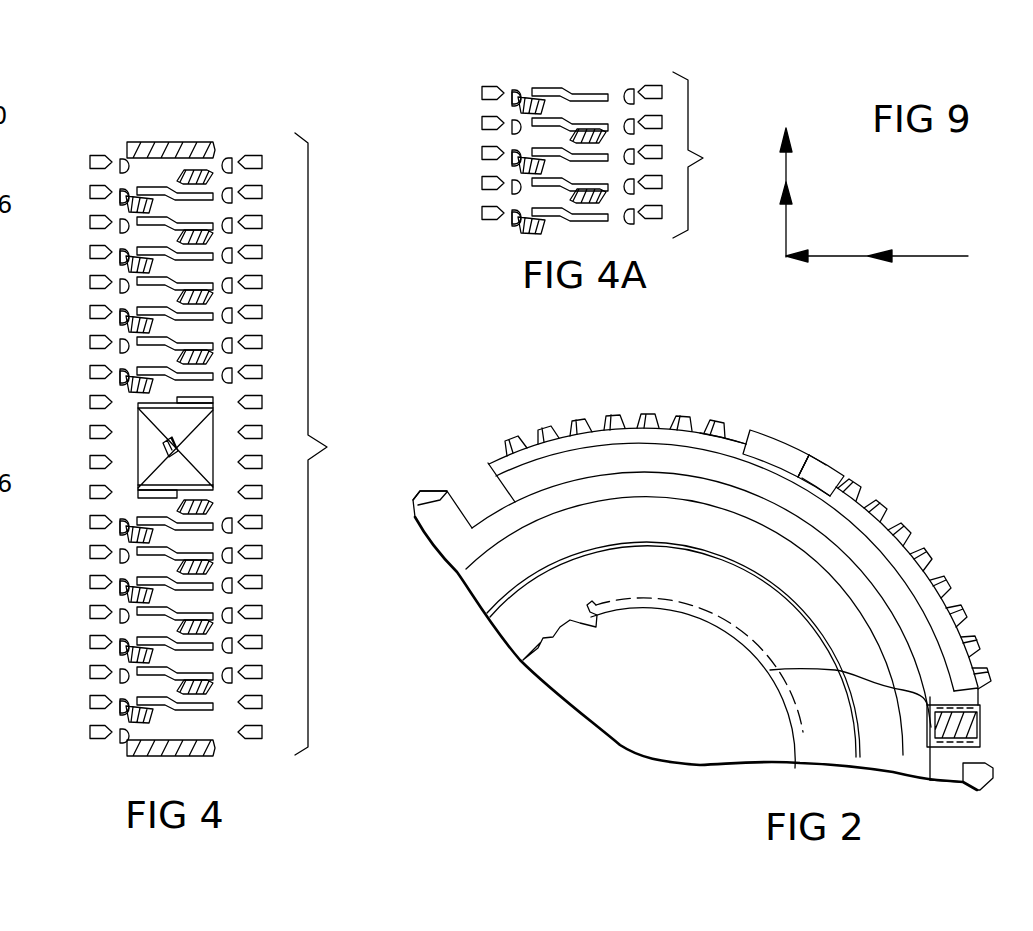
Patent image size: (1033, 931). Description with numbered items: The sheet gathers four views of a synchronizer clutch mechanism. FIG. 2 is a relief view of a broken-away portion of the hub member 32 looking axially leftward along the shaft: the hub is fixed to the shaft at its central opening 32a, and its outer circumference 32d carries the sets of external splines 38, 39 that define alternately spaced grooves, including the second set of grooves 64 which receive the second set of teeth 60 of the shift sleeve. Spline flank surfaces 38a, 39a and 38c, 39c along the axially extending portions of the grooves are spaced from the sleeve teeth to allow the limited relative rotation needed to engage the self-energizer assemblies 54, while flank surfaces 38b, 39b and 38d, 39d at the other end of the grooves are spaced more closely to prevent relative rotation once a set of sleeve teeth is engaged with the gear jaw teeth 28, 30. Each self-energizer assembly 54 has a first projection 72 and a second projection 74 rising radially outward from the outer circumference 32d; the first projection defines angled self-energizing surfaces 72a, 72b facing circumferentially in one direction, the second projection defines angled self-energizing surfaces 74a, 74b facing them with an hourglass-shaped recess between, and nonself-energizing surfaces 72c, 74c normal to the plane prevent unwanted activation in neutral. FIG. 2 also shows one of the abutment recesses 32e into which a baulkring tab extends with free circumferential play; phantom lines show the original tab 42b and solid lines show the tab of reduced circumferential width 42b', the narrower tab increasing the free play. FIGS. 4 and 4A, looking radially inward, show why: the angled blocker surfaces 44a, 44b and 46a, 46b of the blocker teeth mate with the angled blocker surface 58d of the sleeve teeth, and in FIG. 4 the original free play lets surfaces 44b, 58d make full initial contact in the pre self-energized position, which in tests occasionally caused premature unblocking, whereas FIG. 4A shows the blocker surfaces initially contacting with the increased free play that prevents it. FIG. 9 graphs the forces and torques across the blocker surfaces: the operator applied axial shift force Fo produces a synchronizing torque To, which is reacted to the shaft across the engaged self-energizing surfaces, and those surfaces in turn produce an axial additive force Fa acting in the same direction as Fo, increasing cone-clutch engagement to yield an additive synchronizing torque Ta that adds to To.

In FIG. 4A, the gear jaw teeth 28 is at (492, 88).
In FIG. 4A, the gear jaw teeth 30 is at (648, 87).
In FIG. 2, the hub member 32 is at (672, 586).
In FIG. 2, the central opening 32a is at (596, 608).
In FIG. 2, the outer circumference 32d is at (490, 460).
In FIG. 2, the abutment recesses 32e is at (458, 493).
In FIG. 2, the external splines 38 is at (645, 413).
In FIG. 4, the spline flank surface 38a is at (142, 588).
In FIG. 2, the spline flank surface 38a is at (888, 500).
In FIG. 4, the flank surface 38b is at (142, 580).
In FIG. 2, the flank surface 38b is at (575, 420).
In FIG. 4, the spline flank surface 38c is at (210, 580).
In FIG. 4, the flank surface 38d is at (210, 597).
In FIG. 2, the flank surface 38d is at (935, 560).
In FIG. 2, the external splines 39 is at (685, 416).
In FIG. 4, the spline flank surface 39a is at (147, 613).
In FIG. 2, the spline flank surface 39a is at (900, 520).
In FIG. 4, the flank surface 39b is at (143, 628).
In FIG. 2, the flank surface 39b is at (545, 425).
In FIG. 4, the spline flank surface 39c is at (217, 620).
In FIG. 4, the flank surface 39d is at (213, 610).
In FIG. 2, the flank surface 39d is at (940, 567).
In FIG. 2, the tab 42b is at (842, 744).
In FIG. 2, the tab of reduced circumferential width 42b' is at (836, 690).
In FIG. 4, the angled blocker surface 44a is at (127, 160).
In FIG. 4, the angled blocker surface 44b is at (125, 177).
In FIG. 4A, the angled blocker surface 44b is at (517, 108).
In FIG. 4, the angled blocker surface 46a is at (222, 158).
In FIG. 4, the angled blocker surface 46b is at (222, 175).
In FIG. 4, the self-energizer assembly 54 is at (115, 446).
In FIG. 4A, the angled blocker surface 58d is at (517, 165).
In FIG. 4, the second set of teeth 60 is at (11, 300).
In FIG. 4, the second set of grooves 64 is at (9, 442).
In FIG. 4, the first projection 72 is at (183, 420).
In FIG. 2, the first projection 72 is at (770, 428).
In FIG. 2, the self-energizing surface 72a is at (773, 440).
In FIG. 4, the self-energizing surface 72b is at (200, 412).
In FIG. 2, the nonself-energizing surface 72c is at (800, 452).
In FIG. 4, the second projection 74 is at (190, 478).
In FIG. 2, the second projection 74 is at (843, 470).
In FIG. 2, the self-energizing surface 74a is at (830, 467).
In FIG. 4, the self-energizing surface 74b is at (195, 445).
In FIG. 2, the nonself-energizing surface 74c is at (810, 455).
In FIG. 9, the additive synchronizing torque Ta is at (786, 163).
In FIG. 9, the synchronizing torque To is at (786, 228).
In FIG. 9, the operator applied axial shift force Fo is at (850, 255).
In FIG. 9, the axial additive force Fa is at (928, 255).